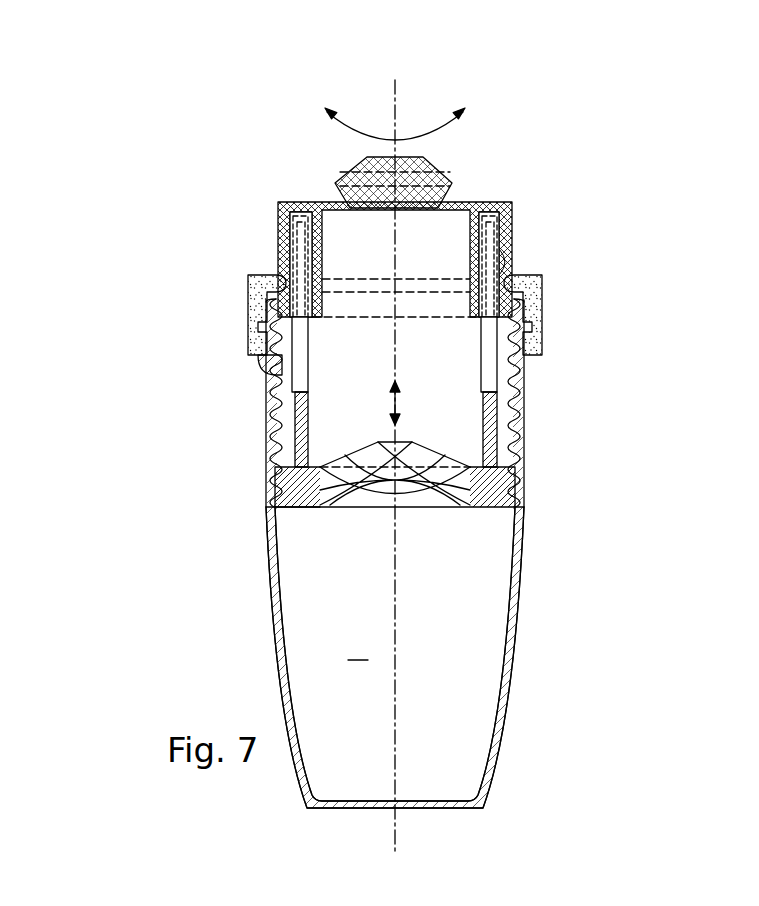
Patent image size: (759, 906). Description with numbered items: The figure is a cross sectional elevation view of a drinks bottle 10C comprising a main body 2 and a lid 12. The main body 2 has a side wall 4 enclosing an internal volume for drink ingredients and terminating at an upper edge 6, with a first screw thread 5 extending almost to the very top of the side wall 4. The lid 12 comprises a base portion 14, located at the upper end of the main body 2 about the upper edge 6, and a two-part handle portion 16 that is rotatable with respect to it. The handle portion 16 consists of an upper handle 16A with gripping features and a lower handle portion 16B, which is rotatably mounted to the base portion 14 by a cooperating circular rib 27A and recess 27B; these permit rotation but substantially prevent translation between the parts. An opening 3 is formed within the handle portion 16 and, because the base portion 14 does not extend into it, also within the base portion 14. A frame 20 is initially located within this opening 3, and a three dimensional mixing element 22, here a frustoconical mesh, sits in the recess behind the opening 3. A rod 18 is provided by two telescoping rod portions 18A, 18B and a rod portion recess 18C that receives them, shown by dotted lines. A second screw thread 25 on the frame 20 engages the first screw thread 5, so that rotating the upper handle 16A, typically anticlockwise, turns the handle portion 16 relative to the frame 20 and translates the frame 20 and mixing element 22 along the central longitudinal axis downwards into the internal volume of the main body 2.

The drinks bottle 10C is at (547, 130).
The lid 12 is at (630, 328).
The two-part handle portion 16 is at (603, 201).
The upper handle 16A is at (452, 183).
The lower handle portion 16B is at (513, 222).
The rib 27A is at (507, 281).
The recess 27B is at (507, 262).
The base portion 14 is at (540, 331).
The upper edge 6 is at (250, 291).
The opening 3 is at (355, 305).
The main body 2 is at (527, 432).
The side wall 4 is at (522, 548).
The first screw thread 5 is at (283, 443).
The rod 18 is at (176, 260).
The rod portion 18A is at (295, 425).
The rod portion 18B is at (252, 347).
The rod portion recess 18C is at (278, 266).
The frame 20 is at (515, 490).
The mixing element 22 is at (428, 450).
The second screw thread 25 is at (295, 505).